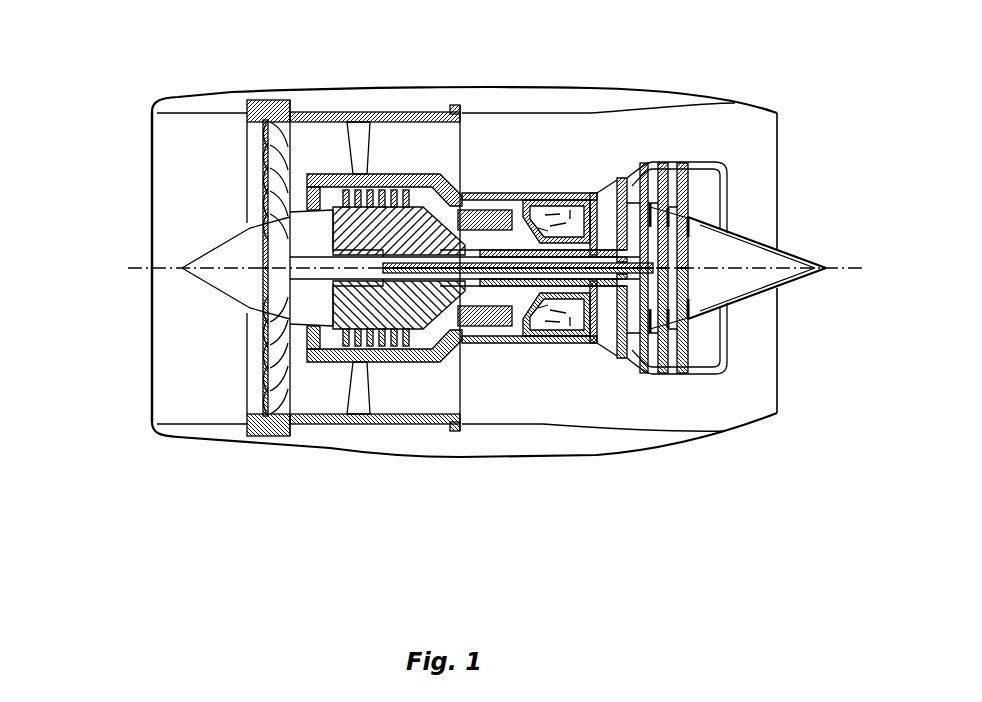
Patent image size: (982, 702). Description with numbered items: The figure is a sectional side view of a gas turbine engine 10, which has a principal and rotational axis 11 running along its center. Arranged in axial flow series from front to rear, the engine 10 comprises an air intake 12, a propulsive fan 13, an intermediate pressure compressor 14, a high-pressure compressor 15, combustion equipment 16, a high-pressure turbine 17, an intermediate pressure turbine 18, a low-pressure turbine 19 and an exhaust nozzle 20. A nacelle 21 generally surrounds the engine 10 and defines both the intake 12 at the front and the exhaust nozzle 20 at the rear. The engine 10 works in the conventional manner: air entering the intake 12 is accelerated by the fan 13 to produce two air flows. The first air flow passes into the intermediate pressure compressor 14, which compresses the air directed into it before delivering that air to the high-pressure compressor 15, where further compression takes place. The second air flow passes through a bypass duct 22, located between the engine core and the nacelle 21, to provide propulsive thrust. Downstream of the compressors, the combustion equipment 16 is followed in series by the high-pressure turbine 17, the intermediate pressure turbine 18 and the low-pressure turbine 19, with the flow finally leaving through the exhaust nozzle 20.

The gas turbine engine 10 is at (130, 146).
The principal and rotational axis 11 is at (143, 268).
The air intake 12 is at (213, 112).
The propulsive fan 13 is at (267, 392).
The intermediate pressure compressor 14 is at (375, 335).
The high-pressure compressor 15 is at (480, 216).
The combustion equipment 16 is at (550, 334).
The high-pressure turbine 17 is at (590, 334).
The intermediate pressure turbine 18 is at (620, 193).
The low-pressure turbine 19 is at (645, 353).
The exhaust nozzle 20 is at (778, 413).
The nacelle 21 is at (590, 80).
The bypass duct 22 is at (436, 159).